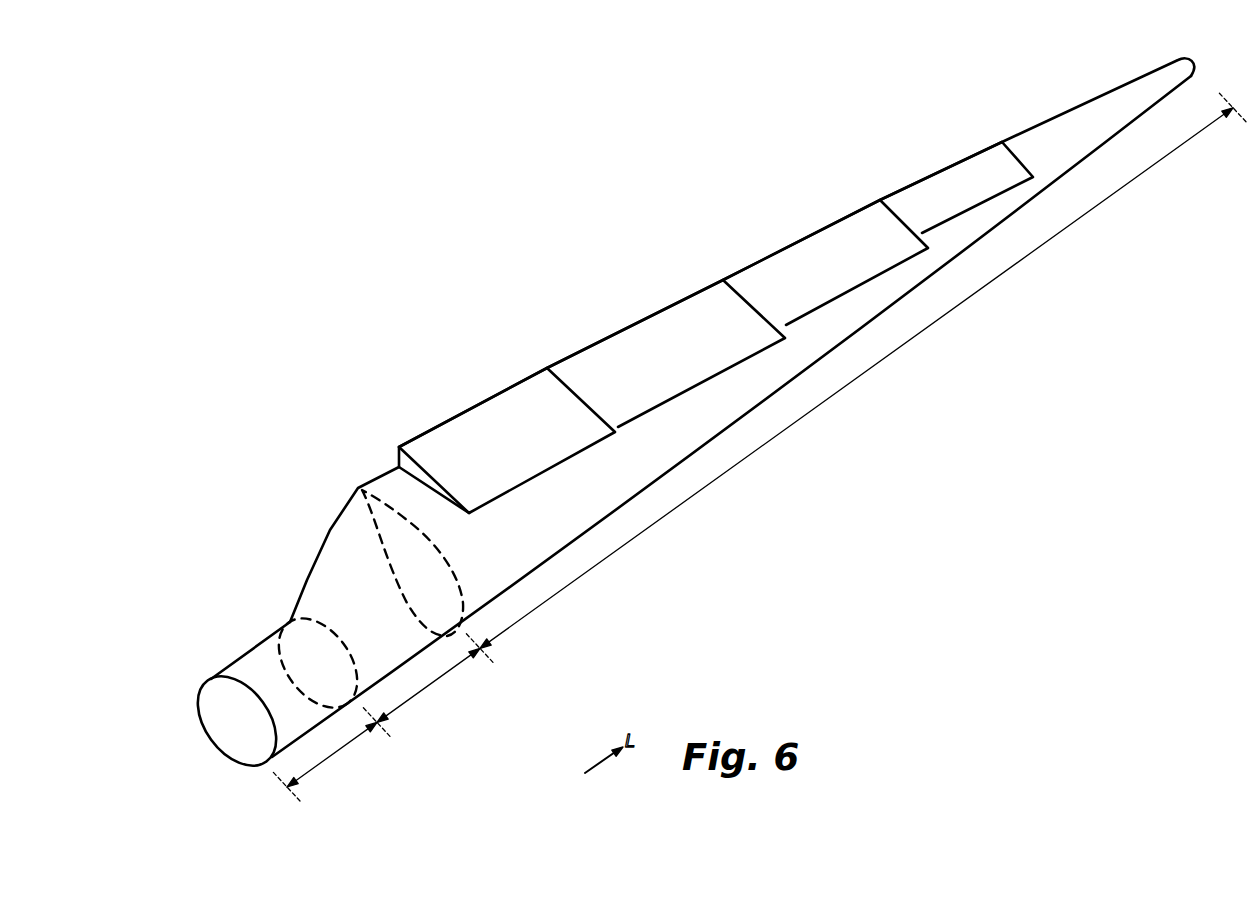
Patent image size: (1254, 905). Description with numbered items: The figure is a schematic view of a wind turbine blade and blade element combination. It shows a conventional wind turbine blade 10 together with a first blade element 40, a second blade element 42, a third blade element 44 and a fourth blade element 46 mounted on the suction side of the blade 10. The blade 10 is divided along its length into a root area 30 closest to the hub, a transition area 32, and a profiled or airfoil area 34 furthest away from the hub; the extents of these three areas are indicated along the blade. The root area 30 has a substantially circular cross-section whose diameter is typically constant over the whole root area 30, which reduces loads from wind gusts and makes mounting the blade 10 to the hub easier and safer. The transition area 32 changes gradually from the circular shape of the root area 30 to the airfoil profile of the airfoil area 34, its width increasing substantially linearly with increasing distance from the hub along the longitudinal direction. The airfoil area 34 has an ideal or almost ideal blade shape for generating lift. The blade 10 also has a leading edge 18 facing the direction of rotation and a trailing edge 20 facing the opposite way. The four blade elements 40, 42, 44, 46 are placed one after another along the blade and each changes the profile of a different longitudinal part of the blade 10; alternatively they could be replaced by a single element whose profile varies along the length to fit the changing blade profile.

The wind turbine blade 10 is at (688, 419).
The leading edge 18 is at (893, 308).
The trailing edge 20 is at (1050, 121).
The root area 30 is at (333, 755).
The transition area 32 is at (430, 684).
The airfoil area 34 is at (780, 433).
The first blade element 40 is at (502, 413).
The second blade element 42 is at (690, 317).
The third blade element 44 is at (800, 265).
The fourth blade element 46 is at (943, 192).